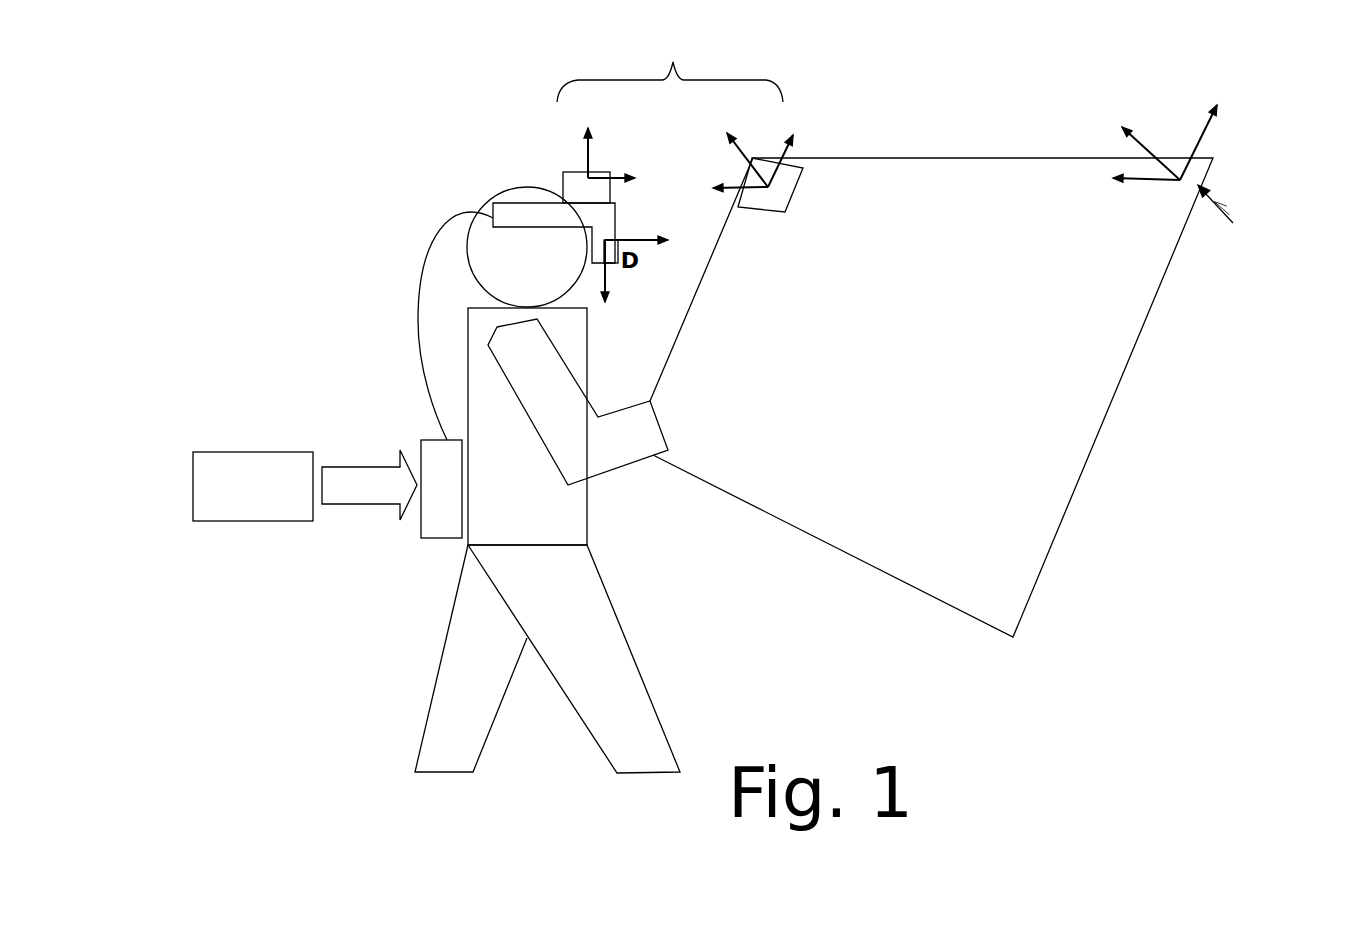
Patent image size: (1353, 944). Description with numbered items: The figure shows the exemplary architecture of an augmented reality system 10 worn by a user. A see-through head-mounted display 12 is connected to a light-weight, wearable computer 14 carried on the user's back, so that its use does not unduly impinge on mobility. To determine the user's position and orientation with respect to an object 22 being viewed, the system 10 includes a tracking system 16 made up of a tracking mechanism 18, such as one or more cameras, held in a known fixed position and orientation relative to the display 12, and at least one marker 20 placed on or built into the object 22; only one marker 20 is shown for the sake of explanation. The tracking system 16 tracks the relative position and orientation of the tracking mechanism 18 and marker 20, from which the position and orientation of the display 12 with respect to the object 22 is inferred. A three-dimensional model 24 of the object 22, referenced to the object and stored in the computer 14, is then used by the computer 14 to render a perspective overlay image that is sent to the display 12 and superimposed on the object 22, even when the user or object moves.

The augmented reality system 10 is at (325, 140).
The head-mounted display 12 is at (518, 213).
The computer 14 is at (422, 540).
The tracking system 16 is at (670, 75).
The tracking mechanism 18 is at (563, 173).
The marker 20 is at (787, 213).
The object 22 is at (1095, 440).
The 3D model 24 is at (252, 451).